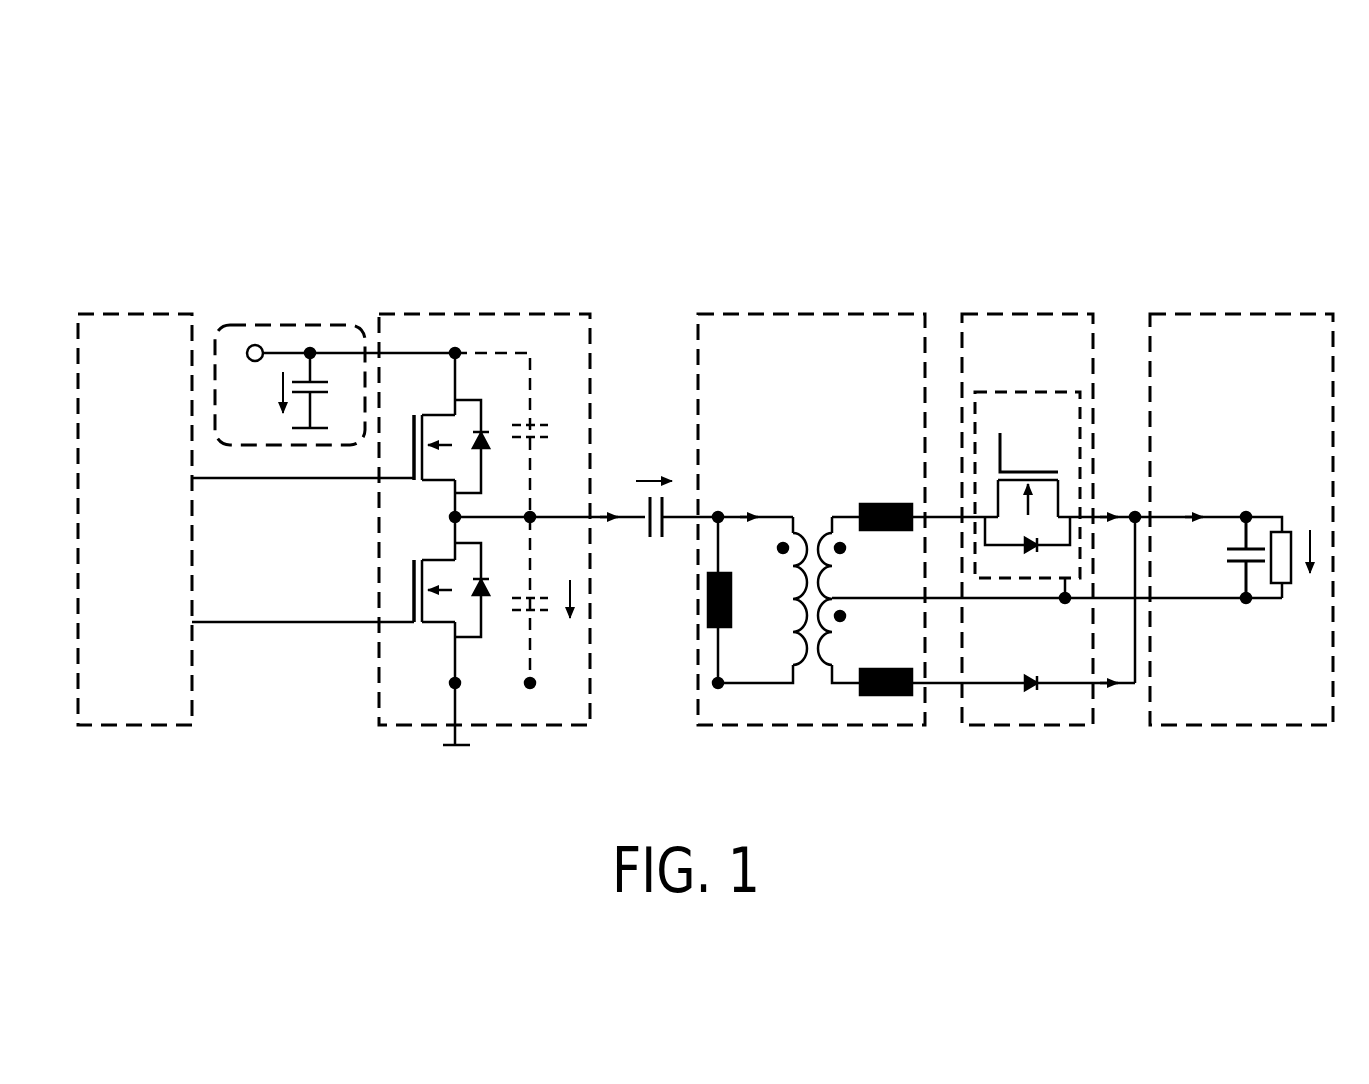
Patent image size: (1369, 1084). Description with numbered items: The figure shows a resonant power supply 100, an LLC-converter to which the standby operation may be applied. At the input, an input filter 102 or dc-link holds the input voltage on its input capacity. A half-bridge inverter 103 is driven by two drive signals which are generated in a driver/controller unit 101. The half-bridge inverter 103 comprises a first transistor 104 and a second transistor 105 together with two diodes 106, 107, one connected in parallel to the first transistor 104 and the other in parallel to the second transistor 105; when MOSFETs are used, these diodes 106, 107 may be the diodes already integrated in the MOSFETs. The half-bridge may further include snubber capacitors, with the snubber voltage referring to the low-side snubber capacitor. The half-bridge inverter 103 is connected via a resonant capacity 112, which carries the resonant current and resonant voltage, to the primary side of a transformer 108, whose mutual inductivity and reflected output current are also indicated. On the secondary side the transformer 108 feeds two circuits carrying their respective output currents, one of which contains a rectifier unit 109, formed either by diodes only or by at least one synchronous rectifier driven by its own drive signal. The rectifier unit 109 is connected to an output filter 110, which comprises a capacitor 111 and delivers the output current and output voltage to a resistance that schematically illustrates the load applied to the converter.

The resonant power supply 100 is at (928, 196).
The driver/controller unit 101 is at (136, 313).
The input filter 102 is at (302, 302).
The half-bridge inverter 103 is at (497, 313).
The first transistor 104 is at (438, 413).
The second transistor 105 is at (437, 625).
The diode 106 is at (482, 432).
The diode 107 is at (482, 610).
The transformer 108 is at (820, 313).
The rectifier unit 109 is at (1020, 313).
The output filter 110 is at (1242, 313).
The capacitor 111 is at (1256, 565).
The resonant capacity 112 is at (658, 542).